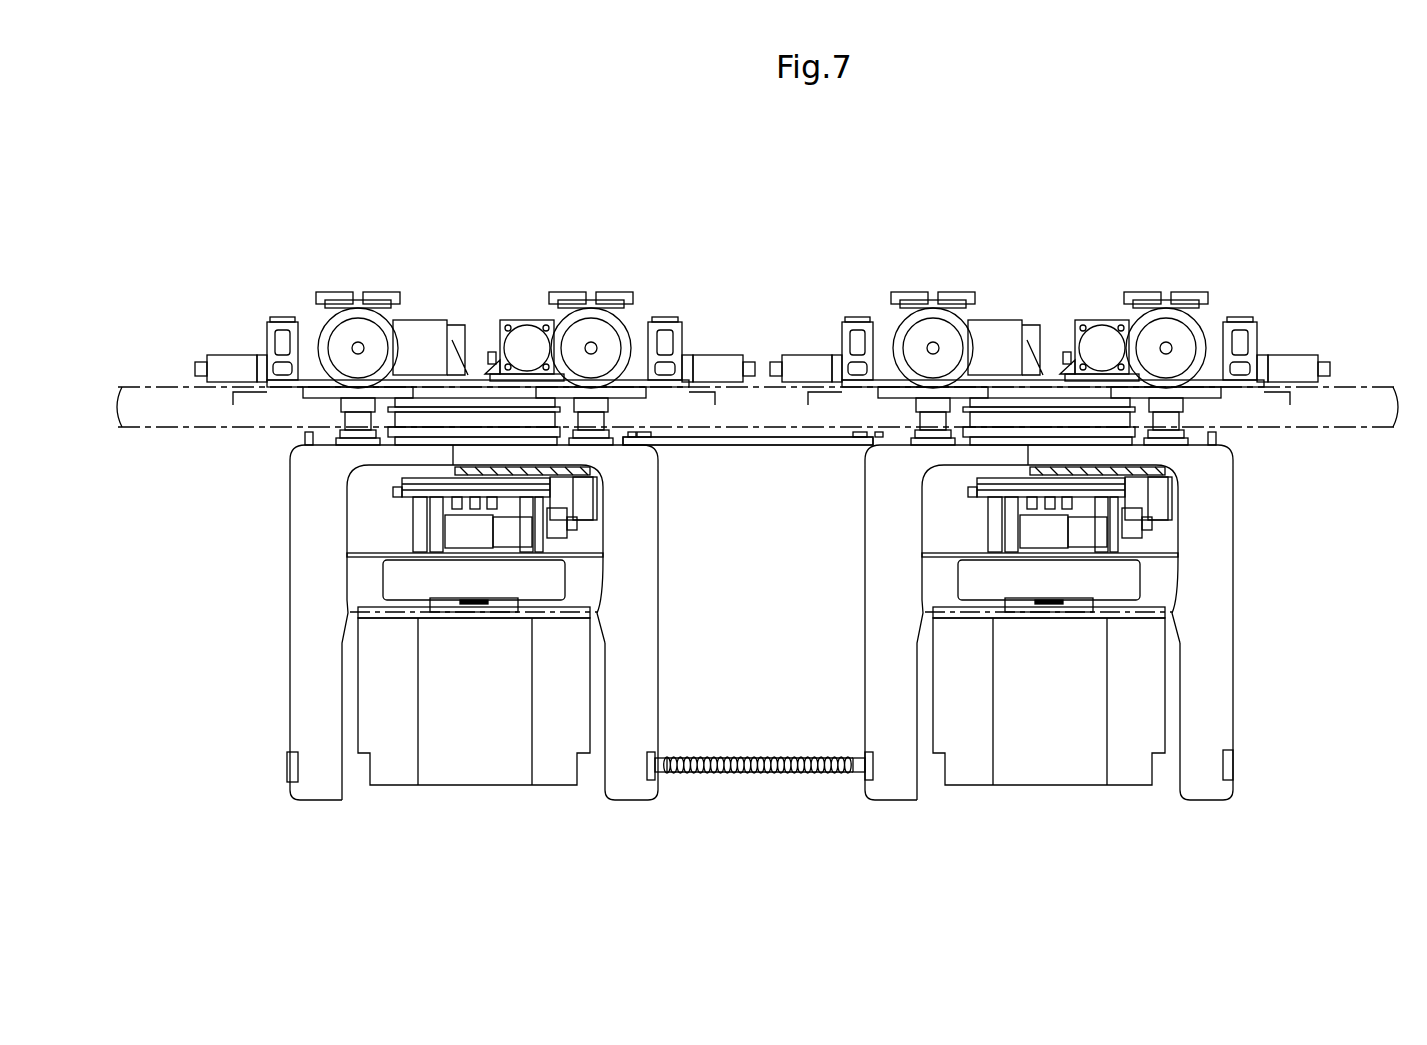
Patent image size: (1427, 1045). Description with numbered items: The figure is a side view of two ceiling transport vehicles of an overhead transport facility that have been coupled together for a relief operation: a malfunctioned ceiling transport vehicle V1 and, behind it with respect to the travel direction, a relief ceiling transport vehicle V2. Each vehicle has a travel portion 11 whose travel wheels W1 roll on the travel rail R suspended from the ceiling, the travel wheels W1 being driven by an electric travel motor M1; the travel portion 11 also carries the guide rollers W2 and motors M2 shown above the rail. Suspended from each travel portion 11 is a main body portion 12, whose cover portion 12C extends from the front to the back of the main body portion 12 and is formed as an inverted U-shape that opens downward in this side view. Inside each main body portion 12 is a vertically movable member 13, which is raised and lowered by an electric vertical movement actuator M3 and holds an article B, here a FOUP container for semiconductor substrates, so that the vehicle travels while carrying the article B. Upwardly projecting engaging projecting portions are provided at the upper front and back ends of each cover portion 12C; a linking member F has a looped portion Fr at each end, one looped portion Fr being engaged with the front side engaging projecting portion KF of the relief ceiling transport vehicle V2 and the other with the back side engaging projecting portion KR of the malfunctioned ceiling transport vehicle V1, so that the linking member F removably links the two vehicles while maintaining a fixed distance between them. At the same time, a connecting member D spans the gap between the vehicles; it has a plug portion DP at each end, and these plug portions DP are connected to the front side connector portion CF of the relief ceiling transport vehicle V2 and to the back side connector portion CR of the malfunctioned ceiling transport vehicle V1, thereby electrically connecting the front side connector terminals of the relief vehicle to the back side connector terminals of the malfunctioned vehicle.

The travel portion 11 is at (456, 268).
The main body portion 12 is at (670, 573).
The cover portion 12C is at (660, 652).
The vertically movable member 13 is at (390, 585).
The travel rail R is at (160, 390).
The travel wheel W1 is at (320, 328).
The guide roller W2 is at (375, 292).
The travel motor M1 is at (521, 333).
The guide motor M2 is at (267, 342).
The vertical movement actuator M3 is at (400, 527).
The article B is at (448, 777).
The connecting member D is at (795, 776).
The plug portion DP is at (660, 776).
The linking member F is at (755, 445).
The looped portion Fr is at (636, 440).
The back side engaging projecting portion KR is at (303, 438).
The front side engaging projecting portion KF is at (655, 440).
The back side connector portion CR is at (288, 765).
The front side connector portion CF is at (876, 767).
The malfunctioned ceiling transport vehicle V1 is at (1286, 596).
The relief ceiling transport vehicle V2 is at (228, 578).